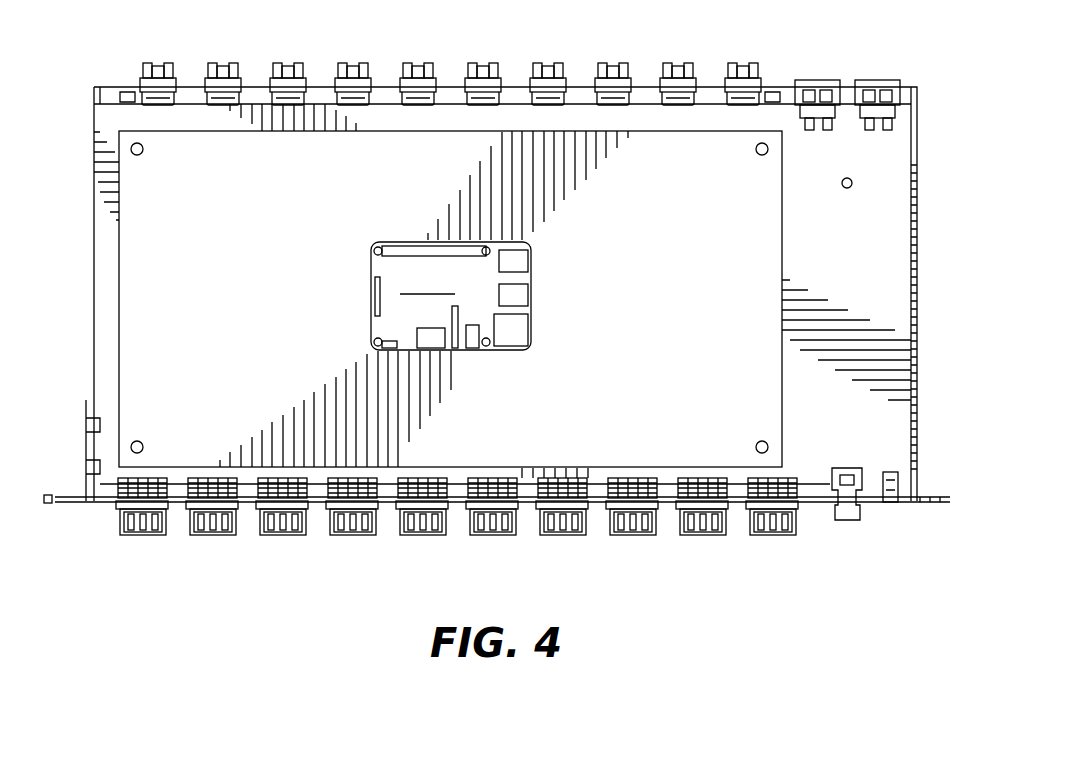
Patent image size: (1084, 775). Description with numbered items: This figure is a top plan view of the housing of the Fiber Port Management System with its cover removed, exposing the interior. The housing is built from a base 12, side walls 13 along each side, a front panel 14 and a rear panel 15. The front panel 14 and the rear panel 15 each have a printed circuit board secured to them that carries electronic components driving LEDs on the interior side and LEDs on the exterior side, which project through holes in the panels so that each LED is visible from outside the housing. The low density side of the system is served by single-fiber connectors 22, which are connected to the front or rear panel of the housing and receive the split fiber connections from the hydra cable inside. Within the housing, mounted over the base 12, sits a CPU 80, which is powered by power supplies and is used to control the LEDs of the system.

The base 12 is at (424, 186).
The side walls 13 is at (92, 253).
The front panel 14 is at (870, 505).
The rear panel 15 is at (790, 88).
The single-fiber connectors 22 is at (130, 536).
The CPU 80 is at (530, 278).